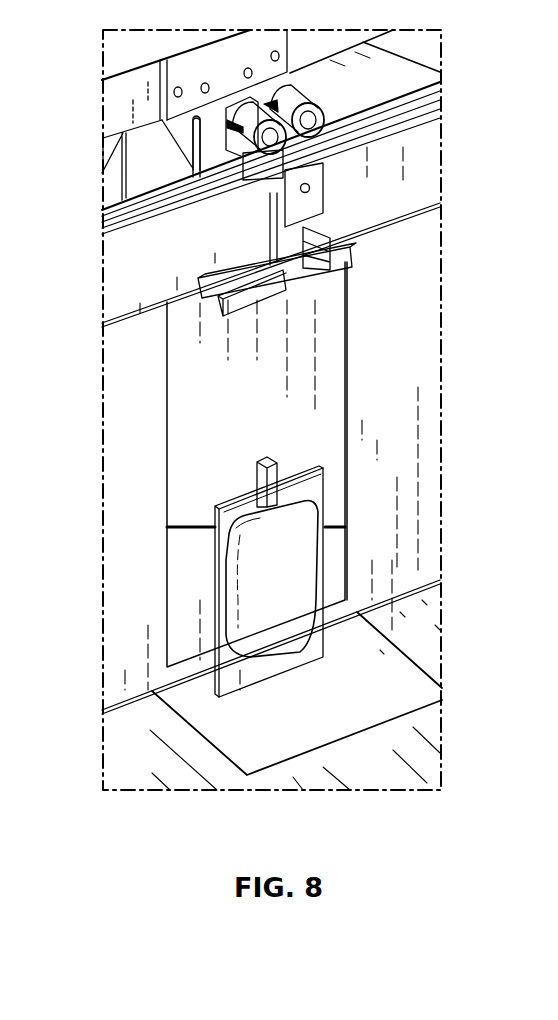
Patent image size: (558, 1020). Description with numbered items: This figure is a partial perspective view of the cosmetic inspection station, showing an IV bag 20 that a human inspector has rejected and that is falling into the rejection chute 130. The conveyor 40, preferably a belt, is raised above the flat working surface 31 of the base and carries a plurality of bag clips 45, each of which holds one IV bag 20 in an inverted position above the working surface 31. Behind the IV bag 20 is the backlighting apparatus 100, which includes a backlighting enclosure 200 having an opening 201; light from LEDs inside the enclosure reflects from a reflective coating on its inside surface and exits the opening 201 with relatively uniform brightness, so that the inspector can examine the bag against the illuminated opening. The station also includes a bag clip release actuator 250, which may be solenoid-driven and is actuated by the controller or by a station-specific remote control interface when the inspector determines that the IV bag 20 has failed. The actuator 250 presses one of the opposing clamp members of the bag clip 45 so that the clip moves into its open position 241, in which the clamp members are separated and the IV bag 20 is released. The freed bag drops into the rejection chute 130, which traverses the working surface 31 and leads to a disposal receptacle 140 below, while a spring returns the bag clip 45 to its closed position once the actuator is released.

The IV bag 20 is at (307, 487).
The working surface 31 is at (118, 745).
The conveyor 40 is at (423, 153).
The bag clip 45 is at (215, 270).
The backlighting apparatus 100 is at (291, 410).
The backlighting enclosure 200 is at (291, 410).
The rejection chute 130 is at (418, 620).
The disposal receptacle 140 is at (330, 735).
The opening 201 is at (356, 275).
The open position 241 is at (193, 287).
The bag clip release actuator 250 is at (443, 73).